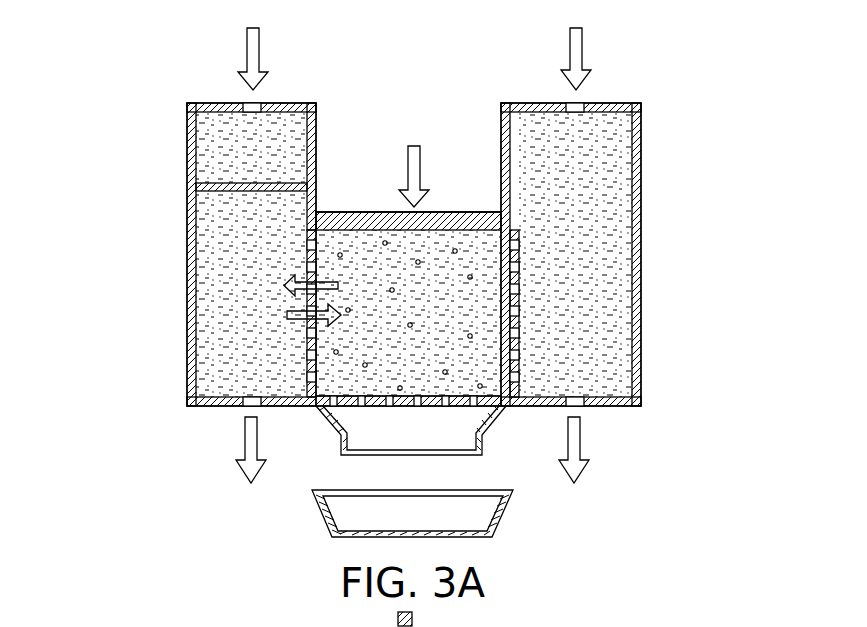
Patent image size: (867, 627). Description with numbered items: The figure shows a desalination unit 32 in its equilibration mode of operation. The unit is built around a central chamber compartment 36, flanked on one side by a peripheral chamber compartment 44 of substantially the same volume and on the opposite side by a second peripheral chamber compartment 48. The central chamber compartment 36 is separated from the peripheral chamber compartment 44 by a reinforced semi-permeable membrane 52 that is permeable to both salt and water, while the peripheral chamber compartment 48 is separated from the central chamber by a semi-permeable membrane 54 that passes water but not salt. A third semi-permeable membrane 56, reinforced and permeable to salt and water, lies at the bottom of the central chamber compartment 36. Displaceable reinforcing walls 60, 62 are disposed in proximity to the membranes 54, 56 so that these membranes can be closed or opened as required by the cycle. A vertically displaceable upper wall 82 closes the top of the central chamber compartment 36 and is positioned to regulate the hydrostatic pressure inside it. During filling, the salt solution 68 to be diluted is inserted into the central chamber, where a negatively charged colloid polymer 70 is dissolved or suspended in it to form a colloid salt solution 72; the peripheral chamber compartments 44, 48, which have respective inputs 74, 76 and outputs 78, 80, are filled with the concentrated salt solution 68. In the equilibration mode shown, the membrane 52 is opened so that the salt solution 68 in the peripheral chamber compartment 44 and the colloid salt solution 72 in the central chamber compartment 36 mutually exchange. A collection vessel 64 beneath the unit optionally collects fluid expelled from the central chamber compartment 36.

The desalination unit 32 is at (143, 101).
The central chamber compartment 36 is at (382, 245).
The peripheral chamber compartment 44 is at (187, 237).
The peripheral chamber compartment 48 is at (641, 175).
The reinforced semi-permeable membrane 52 is at (308, 252).
The semi-permeable membrane 54 is at (519, 332).
The third semi-permeable membrane 56 is at (404, 408).
The reinforcing wall 60 is at (500, 297).
The reinforcing wall 62 is at (418, 394).
The collection vessel 64 is at (314, 494).
The salt solution 68 is at (258, 52).
The negatively charged colloid polymer 70 is at (462, 240).
The colloid salt solution 72 is at (320, 410).
The input 74 is at (248, 103).
The input 76 is at (578, 107).
The output 78 is at (246, 408).
The output 80 is at (578, 408).
The upper wall 82 is at (352, 212).